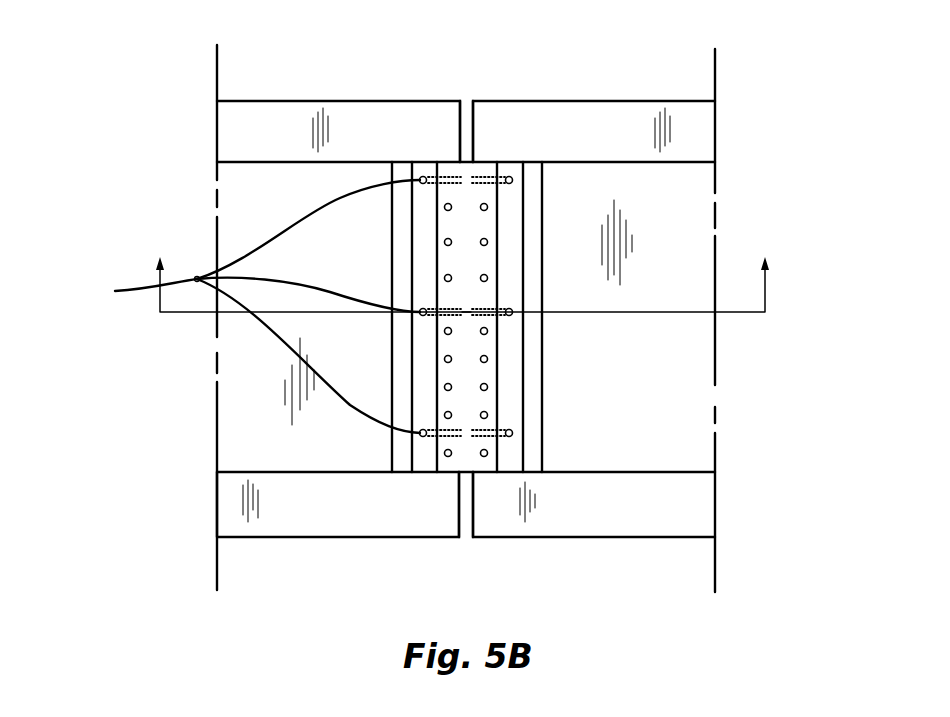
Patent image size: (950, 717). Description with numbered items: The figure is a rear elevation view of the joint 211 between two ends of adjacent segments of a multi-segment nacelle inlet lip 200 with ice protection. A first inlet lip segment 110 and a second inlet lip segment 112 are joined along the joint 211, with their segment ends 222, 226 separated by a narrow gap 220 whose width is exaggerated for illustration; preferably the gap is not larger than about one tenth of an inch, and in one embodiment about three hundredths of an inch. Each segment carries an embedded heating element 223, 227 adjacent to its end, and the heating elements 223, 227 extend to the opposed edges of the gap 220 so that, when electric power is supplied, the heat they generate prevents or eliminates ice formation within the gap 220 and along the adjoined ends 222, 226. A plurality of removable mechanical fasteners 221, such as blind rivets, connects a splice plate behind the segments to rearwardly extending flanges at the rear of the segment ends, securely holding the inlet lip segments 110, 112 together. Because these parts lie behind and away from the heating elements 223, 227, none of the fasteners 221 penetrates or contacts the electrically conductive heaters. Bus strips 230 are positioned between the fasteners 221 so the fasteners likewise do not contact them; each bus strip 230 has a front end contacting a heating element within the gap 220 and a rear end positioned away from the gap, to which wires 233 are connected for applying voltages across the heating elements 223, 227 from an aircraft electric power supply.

The nacelle inlet lip 200 is at (658, 64).
The first inlet lip segment 110 is at (291, 128).
The second inlet lip segment 112 is at (703, 500).
The joint 211 is at (432, 156).
The gap 220 is at (468, 100).
The fasteners 221 is at (488, 388).
The second end 222 is at (425, 540).
The heating element 223 is at (245, 392).
The first end 226 is at (492, 540).
The heating element 227 is at (690, 383).
The bus strips 230 is at (484, 177).
The wires 233 is at (305, 222).